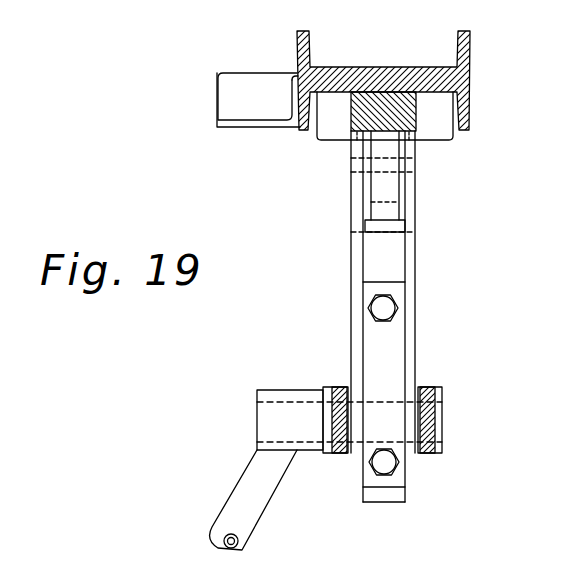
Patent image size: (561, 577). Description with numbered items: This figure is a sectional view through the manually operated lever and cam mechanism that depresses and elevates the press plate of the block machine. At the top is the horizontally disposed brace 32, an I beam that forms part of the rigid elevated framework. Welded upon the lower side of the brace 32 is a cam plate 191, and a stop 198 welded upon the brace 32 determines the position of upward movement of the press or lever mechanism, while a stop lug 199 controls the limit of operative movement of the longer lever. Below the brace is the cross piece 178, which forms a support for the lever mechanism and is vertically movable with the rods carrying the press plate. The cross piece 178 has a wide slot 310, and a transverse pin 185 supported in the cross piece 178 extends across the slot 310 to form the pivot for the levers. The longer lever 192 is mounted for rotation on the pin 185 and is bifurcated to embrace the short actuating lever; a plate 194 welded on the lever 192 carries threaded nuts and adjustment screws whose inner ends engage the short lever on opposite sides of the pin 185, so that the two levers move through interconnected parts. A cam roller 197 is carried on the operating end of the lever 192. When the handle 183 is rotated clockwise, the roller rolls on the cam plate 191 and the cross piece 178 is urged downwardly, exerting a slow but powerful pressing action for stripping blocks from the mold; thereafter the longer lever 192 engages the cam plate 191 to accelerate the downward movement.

The brace 32 is at (413, 67).
The stop 198 is at (257, 114).
The stop lug 199 is at (336, 136).
The cam plate 191 is at (417, 118).
The cam roller 197 is at (375, 185).
The lever 192 is at (415, 281).
The plate 194 is at (368, 343).
The transverse pin 185 is at (385, 410).
The handle 183 is at (250, 523).
The wide slot 310 is at (418, 416).
The cross piece 178 is at (426, 453).